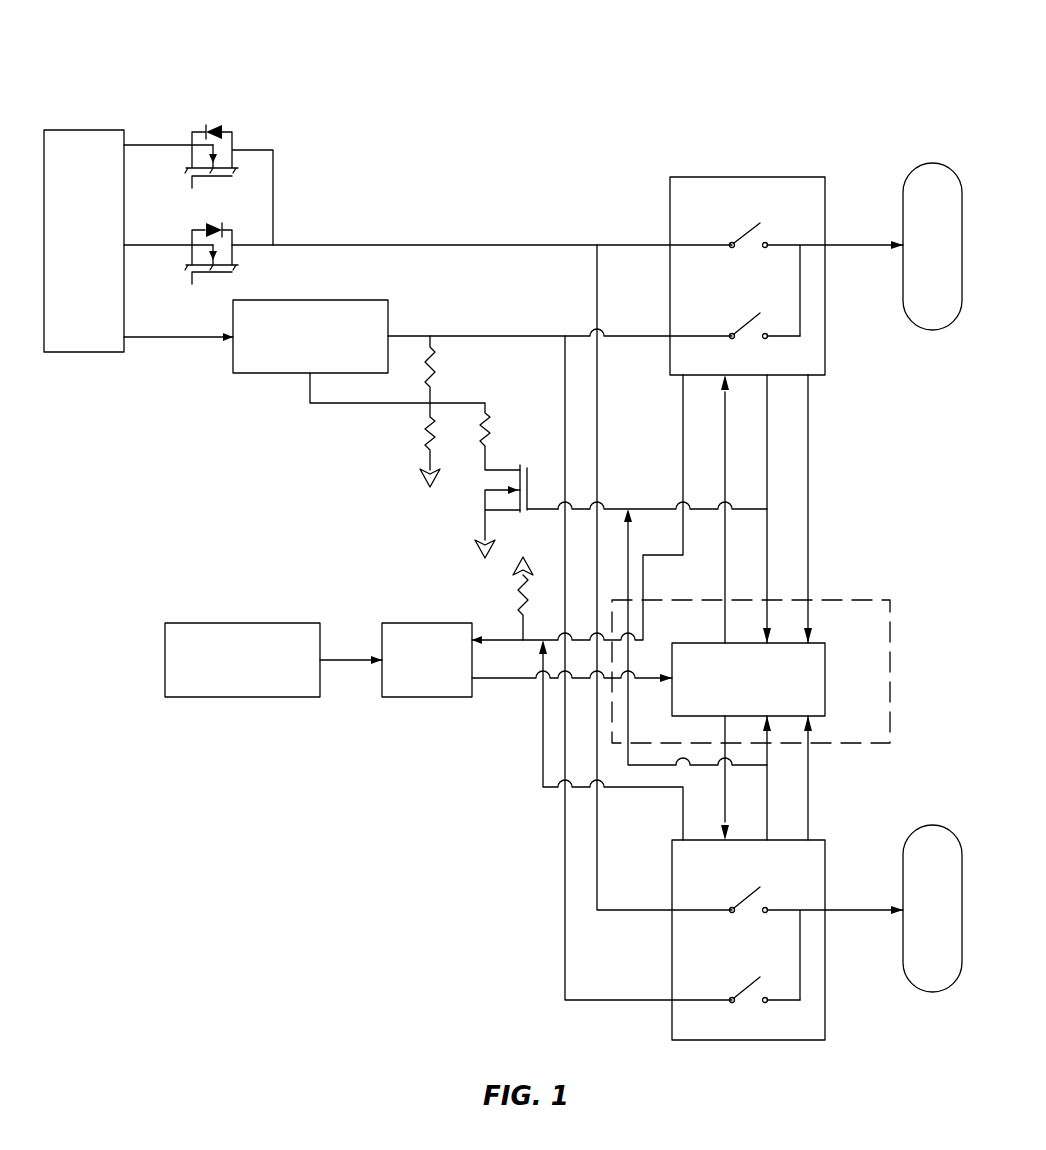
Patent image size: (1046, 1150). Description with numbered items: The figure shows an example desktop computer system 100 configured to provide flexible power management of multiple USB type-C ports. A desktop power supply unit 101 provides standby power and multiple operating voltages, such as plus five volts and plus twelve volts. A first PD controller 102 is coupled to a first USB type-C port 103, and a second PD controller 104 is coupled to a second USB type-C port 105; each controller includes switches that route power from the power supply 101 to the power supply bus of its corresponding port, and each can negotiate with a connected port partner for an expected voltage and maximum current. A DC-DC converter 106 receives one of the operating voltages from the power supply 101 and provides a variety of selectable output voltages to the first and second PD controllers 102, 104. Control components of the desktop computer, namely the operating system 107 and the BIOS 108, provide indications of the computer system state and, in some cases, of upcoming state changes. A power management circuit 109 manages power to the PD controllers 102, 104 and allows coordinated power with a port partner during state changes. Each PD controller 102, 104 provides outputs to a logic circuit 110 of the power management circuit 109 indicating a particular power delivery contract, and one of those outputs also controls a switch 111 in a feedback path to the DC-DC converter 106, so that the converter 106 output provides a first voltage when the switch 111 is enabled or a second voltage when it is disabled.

The desktop computer system 100 is at (503, 523).
The desktop power supply unit 101 is at (84, 223).
The first PD controller 102 is at (786, 257).
The first USB type-C port 103 is at (932, 228).
The second PD controller 104 is at (787, 940).
The second USB type-C port 105 is at (932, 890).
The DC-DC converter 106 is at (310, 319).
The operating system 107 is at (242, 641).
The basic input/output system (BIOS) 108 is at (427, 641).
The power management circuit 109 is at (776, 671).
The logic circuit 110 is at (773, 679).
The switch 111 is at (539, 470).